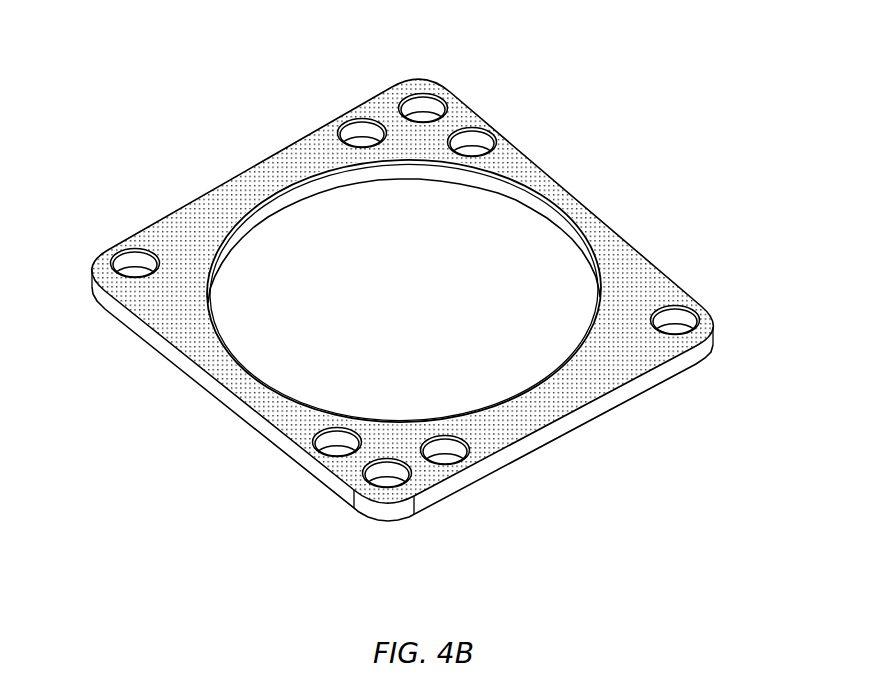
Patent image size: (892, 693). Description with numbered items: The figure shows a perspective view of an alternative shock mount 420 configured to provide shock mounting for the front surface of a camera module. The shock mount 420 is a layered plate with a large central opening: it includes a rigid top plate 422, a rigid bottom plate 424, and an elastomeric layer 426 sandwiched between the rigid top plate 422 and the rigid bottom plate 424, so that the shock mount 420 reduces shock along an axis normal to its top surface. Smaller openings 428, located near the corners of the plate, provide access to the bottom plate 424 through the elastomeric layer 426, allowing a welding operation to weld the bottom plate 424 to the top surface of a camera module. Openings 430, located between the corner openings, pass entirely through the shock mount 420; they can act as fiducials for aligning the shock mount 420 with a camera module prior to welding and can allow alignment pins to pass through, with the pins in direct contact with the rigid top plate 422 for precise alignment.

The shock mount 420 is at (158, 128).
The rigid top plate 422 is at (216, 233).
The rigid bottom plate 424 is at (425, 182).
The elastomeric layer 426 is at (350, 182).
The openings 428 is at (440, 150).
The openings 430 is at (452, 113).